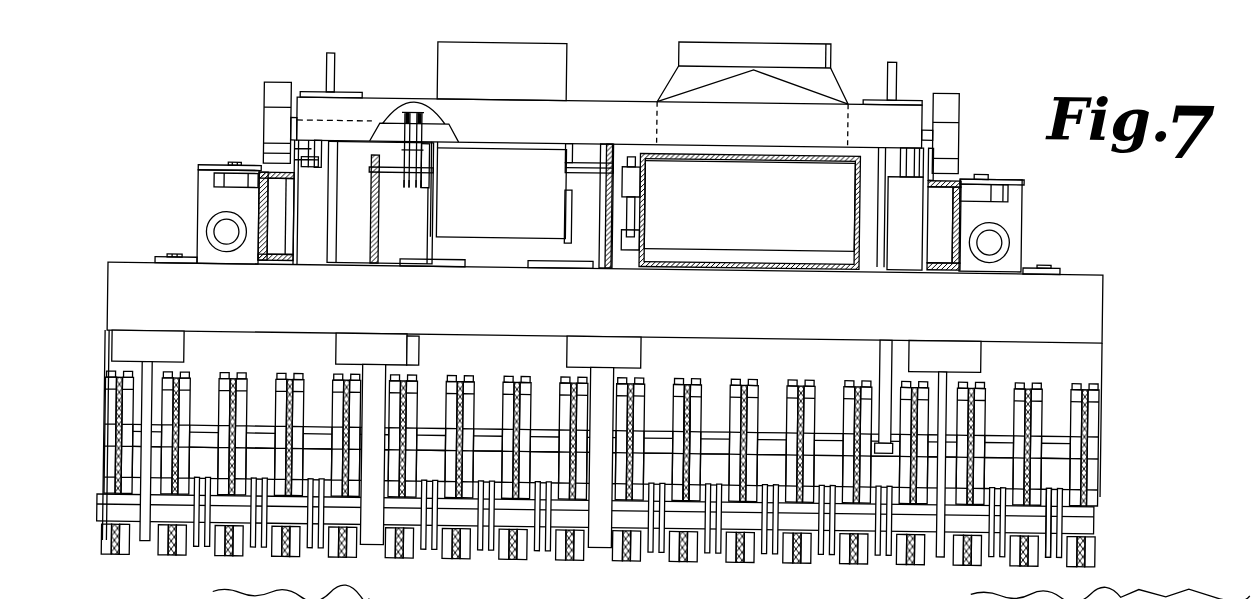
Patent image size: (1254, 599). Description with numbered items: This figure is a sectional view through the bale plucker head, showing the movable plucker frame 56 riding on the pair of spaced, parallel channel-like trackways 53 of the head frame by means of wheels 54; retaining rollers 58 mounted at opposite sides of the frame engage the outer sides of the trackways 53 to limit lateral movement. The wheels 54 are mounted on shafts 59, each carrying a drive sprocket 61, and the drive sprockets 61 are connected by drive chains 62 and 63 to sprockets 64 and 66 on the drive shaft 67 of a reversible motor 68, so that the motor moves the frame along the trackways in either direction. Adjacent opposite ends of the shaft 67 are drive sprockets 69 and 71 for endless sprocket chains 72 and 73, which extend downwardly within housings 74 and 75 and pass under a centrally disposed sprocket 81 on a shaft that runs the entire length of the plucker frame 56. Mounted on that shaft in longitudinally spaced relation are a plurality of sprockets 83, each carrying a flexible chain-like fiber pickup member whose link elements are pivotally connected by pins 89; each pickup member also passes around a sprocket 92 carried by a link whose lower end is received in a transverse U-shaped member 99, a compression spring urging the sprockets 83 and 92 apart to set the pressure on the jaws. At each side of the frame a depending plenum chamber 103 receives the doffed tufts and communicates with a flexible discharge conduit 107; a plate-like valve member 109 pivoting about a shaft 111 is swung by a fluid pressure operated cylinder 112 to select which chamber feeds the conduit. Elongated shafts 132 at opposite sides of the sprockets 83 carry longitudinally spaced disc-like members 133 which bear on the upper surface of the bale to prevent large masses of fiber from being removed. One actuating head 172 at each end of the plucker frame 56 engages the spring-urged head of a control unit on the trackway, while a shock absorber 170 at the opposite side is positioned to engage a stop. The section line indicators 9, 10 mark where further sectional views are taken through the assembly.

The section line 9- 9 is at (297, 42).
The section line 10- 10 is at (375, 75).
The trackways 53 is at (258, 262).
The wheels 54 is at (262, 113).
The plucker frame 56 is at (831, 64).
The retaining rollers 58 is at (213, 166).
The shafts 59 is at (441, 131).
The drive sprockets 61 is at (378, 117).
The drive chain 62 is at (407, 150).
The drive chain 63 is at (430, 156).
The sprocket 64 is at (405, 185).
The sprocket 66 is at (416, 186).
The drive shaft 67 is at (388, 171).
The reversible motor 68 is at (515, 202).
The drive sprocket 69 is at (371, 162).
The drive sprocket 71 is at (604, 149).
The endless sprocket chain 72 is at (372, 239).
The endless sprocket chain 73 is at (605, 233).
The housing 74 is at (407, 365).
The housing 75 is at (615, 364).
The centrally disposed sprocket 81 is at (1066, 462).
The sprockets 83 is at (690, 478).
The pins 89 is at (744, 371).
The sprocket 92 is at (688, 371).
The U-shaped member 99 is at (761, 452).
The plenum chamber 103 is at (812, 121).
The flexible discharge conduit 107 is at (676, 54).
The plate-like valve member 109 is at (807, 207).
The shaft 111 is at (633, 226).
The fluid pressure operated cylinder 112 is at (638, 175).
The elongated shafts 132 is at (1092, 510).
The disc-like members 133 is at (490, 540).
The shock absorber 170 is at (997, 231).
The actuating head 172 is at (217, 229).